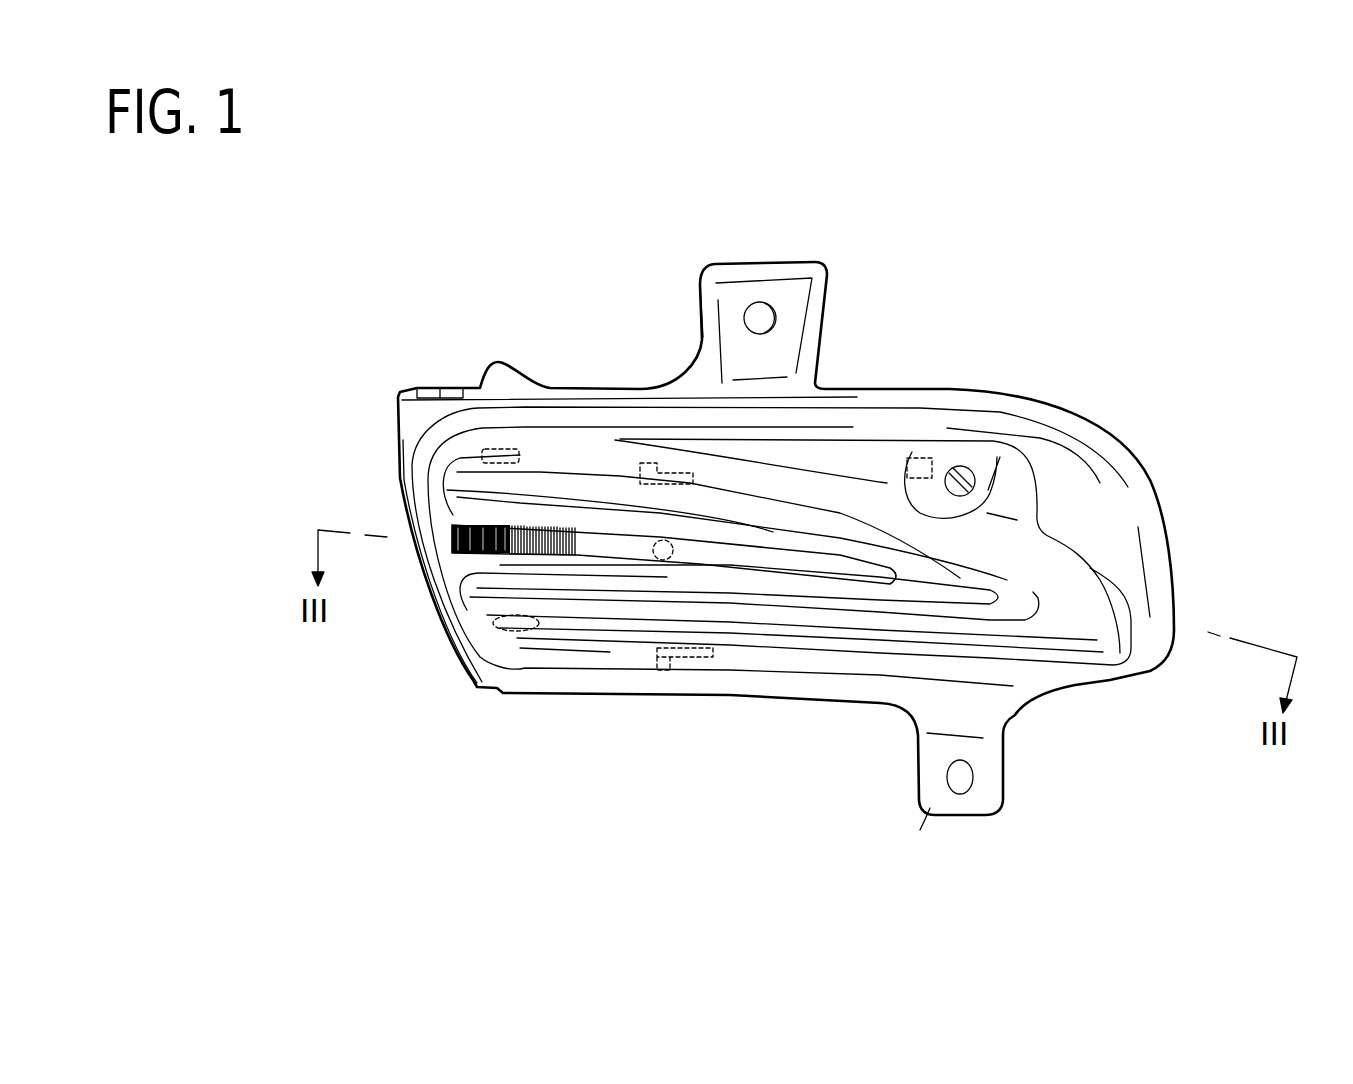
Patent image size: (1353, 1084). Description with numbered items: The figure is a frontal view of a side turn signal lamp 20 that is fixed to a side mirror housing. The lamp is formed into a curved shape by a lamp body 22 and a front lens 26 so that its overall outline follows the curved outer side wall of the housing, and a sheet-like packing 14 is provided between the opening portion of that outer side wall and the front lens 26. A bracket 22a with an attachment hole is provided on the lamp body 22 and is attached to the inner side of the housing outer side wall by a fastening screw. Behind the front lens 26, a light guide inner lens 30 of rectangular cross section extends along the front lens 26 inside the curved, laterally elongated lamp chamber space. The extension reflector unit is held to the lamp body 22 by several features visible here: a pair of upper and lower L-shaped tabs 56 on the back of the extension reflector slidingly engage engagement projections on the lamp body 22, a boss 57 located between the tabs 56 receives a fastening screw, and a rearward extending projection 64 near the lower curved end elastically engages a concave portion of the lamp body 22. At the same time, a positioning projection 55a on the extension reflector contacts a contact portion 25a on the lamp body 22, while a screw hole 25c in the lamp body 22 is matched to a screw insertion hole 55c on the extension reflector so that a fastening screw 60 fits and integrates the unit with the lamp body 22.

The side turn signal lamp 20 is at (632, 273).
The lamp body 22 is at (905, 390).
The bracket 22a is at (757, 262).
The contact portion 25a is at (490, 447).
The positioning projection 55a is at (468, 376).
The screw hole 25c is at (925, 457).
The screw insertion hole 55c is at (983, 385).
The front lens 26 is at (510, 515).
The light guide inner lens 30 is at (597, 540).
The L-shaped tab 56 is at (668, 472).
The boss 57 is at (659, 560).
The fastening screw 60 is at (972, 470).
The rearward extending projection 64 is at (520, 631).
The sheet-like packing 14 is at (539, 704).